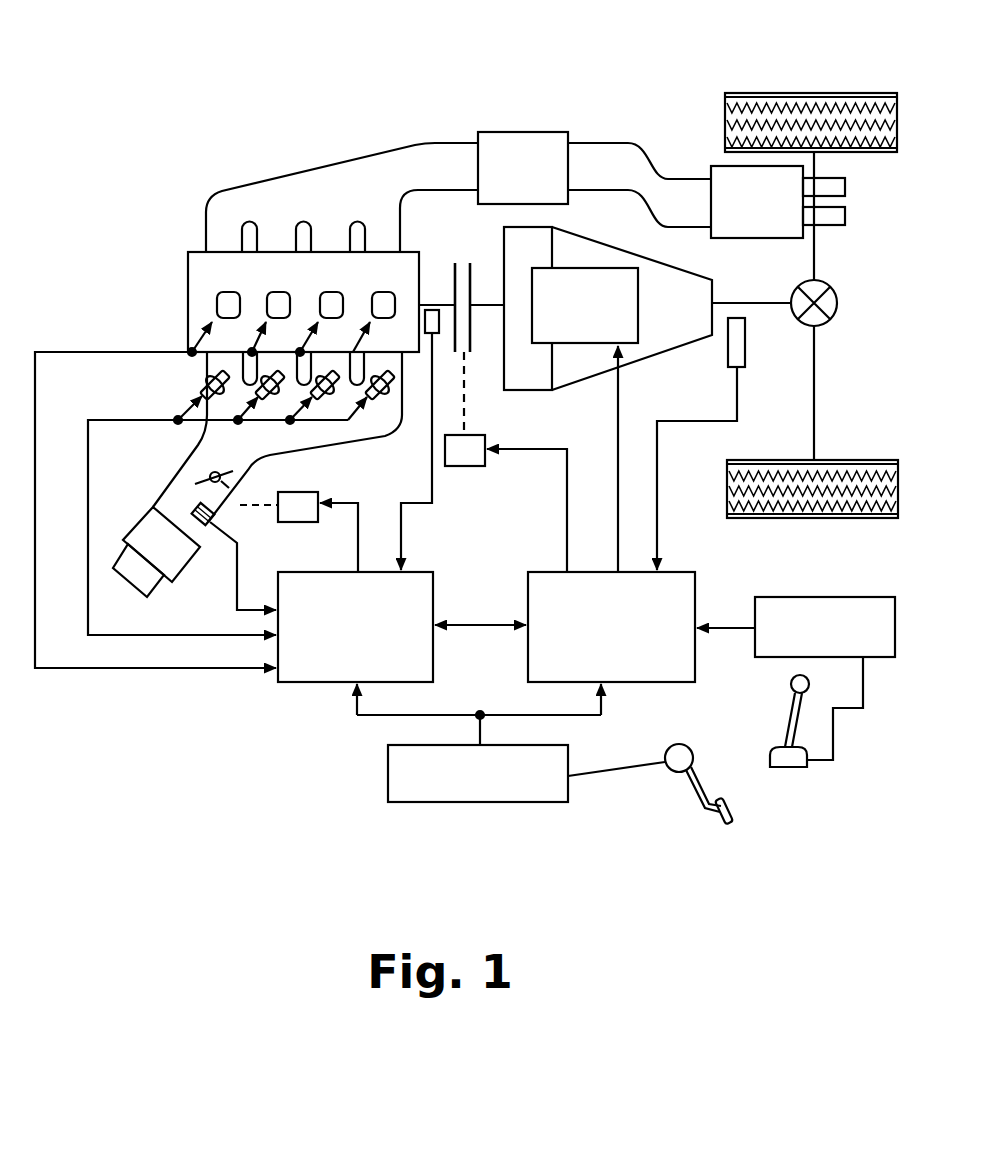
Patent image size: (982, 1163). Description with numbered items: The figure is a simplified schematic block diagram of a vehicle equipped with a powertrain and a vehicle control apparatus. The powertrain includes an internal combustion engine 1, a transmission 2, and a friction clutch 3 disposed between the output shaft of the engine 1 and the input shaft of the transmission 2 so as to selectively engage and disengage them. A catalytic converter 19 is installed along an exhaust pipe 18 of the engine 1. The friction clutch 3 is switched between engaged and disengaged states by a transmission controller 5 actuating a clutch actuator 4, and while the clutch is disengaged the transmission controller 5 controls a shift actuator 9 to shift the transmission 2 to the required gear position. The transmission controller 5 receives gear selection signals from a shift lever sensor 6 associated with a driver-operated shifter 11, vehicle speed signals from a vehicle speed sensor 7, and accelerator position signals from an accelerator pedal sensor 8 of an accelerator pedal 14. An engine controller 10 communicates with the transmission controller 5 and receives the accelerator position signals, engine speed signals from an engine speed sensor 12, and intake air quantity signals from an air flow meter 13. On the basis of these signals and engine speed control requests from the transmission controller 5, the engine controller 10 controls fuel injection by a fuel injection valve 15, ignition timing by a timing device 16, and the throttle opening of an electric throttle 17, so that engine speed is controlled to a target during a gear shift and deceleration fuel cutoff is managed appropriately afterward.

The engine 1 is at (188, 208).
The transmission 2 is at (699, 267).
The friction clutch 3 is at (465, 262).
The clutch actuator 4 is at (472, 435).
The transmission controller 5 is at (670, 572).
The shift lever sensor 6 is at (850, 597).
The vehicle speed sensor 7 is at (745, 350).
The accelerator pedal sensor 8 is at (578, 763).
The shift actuator 9 is at (640, 344).
The engine controller 10 is at (425, 572).
The shifter 11 is at (791, 707).
The engine speed sensor 12 is at (433, 340).
The air flow meter 13 is at (213, 521).
The accelerator pedal 14 is at (690, 746).
The fuel injection valve 15 is at (205, 380).
The timing device 16 is at (188, 297).
The electric throttle 17 is at (323, 481).
The exhaust pipe 18 is at (442, 142).
The catalytic converter 19 is at (557, 132).